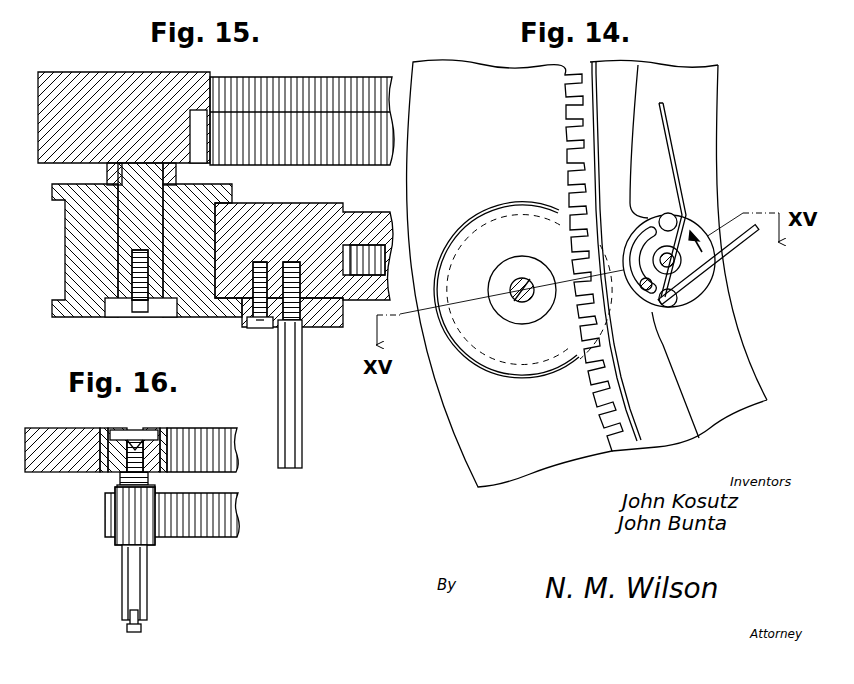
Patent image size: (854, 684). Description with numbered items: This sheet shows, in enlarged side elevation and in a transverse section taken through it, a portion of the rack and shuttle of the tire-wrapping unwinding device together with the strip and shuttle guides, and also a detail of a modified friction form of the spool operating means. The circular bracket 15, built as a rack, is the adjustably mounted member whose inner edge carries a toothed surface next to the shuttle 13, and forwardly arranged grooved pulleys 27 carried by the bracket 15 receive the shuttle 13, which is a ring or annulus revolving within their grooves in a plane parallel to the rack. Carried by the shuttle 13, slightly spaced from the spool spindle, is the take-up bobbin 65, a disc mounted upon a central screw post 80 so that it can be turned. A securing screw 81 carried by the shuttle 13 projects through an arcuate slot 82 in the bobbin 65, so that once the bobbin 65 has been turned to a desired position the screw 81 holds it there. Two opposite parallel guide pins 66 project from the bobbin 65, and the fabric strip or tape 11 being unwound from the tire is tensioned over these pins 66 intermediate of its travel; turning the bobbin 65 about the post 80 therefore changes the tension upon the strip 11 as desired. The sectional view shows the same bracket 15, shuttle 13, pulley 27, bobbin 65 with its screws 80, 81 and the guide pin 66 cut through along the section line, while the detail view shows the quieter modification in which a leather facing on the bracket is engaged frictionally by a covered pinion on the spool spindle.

In FIG. 14, the fabric strip or tape 11 is at (665, 135).
In FIG. 15, the shuttle 13 is at (304, 239).
In FIG. 14, the shuttle 13 is at (678, 255).
In FIG. 15, the circular bracket 15 is at (216, 113).
In FIG. 14, the circular bracket 15 is at (515, 273).
In FIG. 15, the grooved pulleys 27 is at (80, 312).
In FIG. 14, the grooved pulleys 27 is at (508, 208).
In FIG. 15, the take-up bobbin 65 is at (250, 330).
In FIG. 14, the take-up bobbin 65 is at (712, 228).
In FIG. 15, the guide pins 66 is at (292, 441).
In FIG. 14, the guide pins 66 is at (672, 214).
In FIG. 15, the central screw post 80 is at (300, 333).
In FIG. 14, the central screw post 80 is at (688, 222).
In FIG. 15, the securing screw 81 is at (266, 332).
In FIG. 14, the securing screw 81 is at (645, 292).
In FIG. 14, the arcuate slot 82 is at (640, 233).